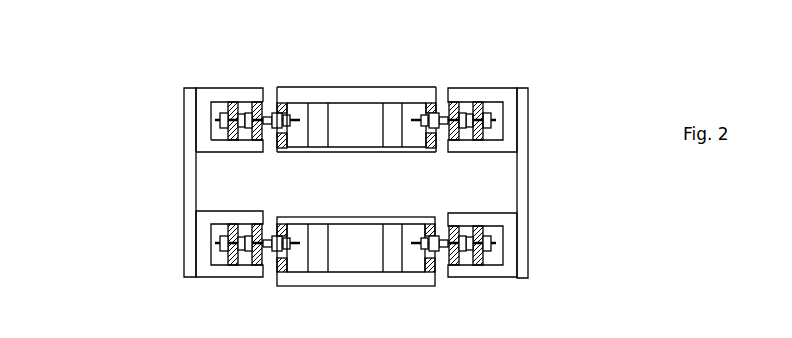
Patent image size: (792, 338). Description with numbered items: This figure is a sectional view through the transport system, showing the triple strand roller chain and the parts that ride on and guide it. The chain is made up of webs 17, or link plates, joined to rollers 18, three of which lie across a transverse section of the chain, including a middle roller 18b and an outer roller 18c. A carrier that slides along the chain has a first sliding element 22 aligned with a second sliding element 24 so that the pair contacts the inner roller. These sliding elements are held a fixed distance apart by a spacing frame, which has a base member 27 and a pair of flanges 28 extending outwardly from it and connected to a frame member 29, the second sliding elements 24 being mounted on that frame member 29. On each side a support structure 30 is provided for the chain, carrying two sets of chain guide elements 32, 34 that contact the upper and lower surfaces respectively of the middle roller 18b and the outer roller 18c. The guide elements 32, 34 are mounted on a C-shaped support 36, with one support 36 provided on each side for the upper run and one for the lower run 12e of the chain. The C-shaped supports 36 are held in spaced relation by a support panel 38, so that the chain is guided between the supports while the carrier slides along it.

The lower run 12e is at (489, 256).
The web 17 is at (443, 106).
The roller 18 is at (430, 128).
The middle roller 18b is at (456, 106).
The outer roller 18c is at (482, 106).
The first sliding element 22 is at (282, 105).
The second sliding element 24 is at (289, 146).
The base member 27 is at (393, 83).
The flange 28 is at (320, 112).
The frame member 29 is at (355, 155).
The support structure 30 is at (516, 120).
The chain guide element 32 is at (228, 103).
The chain guide element 34 is at (222, 140).
The C-shaped support 36 is at (503, 86).
The support panel 38 is at (530, 233).